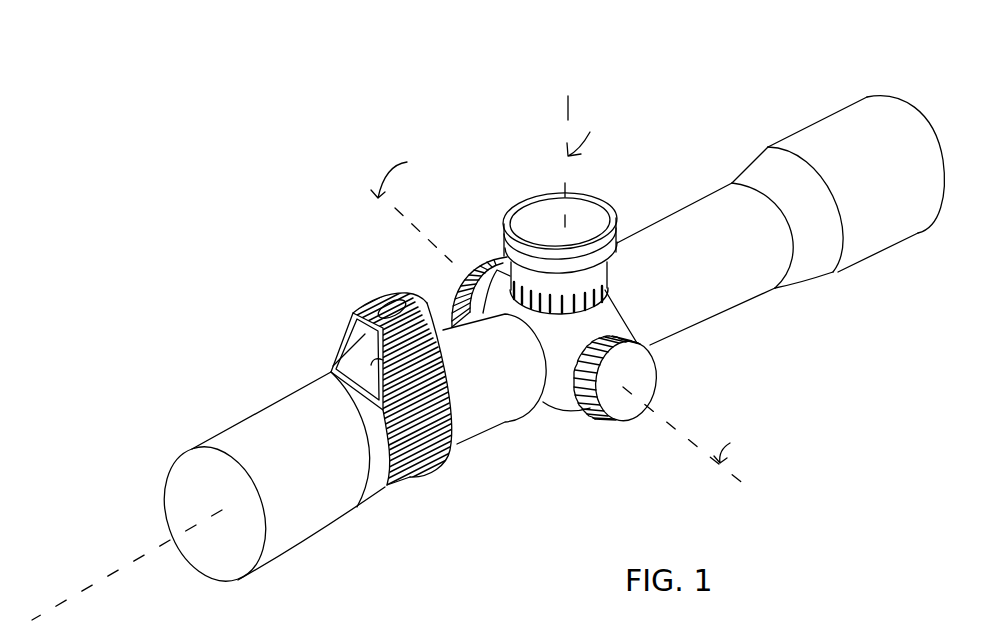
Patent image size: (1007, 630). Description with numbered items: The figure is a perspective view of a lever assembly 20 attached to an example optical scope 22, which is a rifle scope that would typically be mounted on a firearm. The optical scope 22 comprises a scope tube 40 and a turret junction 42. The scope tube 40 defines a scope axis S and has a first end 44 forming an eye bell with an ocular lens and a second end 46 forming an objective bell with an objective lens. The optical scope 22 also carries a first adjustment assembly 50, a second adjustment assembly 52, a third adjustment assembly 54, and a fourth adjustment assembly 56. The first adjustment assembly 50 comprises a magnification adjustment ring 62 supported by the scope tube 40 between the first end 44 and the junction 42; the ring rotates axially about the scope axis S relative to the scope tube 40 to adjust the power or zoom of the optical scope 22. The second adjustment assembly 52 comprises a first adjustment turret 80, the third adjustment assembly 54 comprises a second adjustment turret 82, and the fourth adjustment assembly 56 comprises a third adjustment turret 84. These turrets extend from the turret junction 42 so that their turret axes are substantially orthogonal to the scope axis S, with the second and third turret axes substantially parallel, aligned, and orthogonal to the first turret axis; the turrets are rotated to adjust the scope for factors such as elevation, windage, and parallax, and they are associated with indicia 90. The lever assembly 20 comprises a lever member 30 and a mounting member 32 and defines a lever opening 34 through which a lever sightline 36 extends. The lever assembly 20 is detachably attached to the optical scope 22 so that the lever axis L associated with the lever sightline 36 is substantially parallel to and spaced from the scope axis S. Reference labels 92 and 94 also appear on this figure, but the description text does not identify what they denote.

The lever assembly 20 is at (285, 348).
The optical scope 22 is at (856, 78).
The lever member 30 is at (352, 321).
The mounting member 32 is at (384, 370).
The lever opening 34 is at (326, 363).
The lever sightline 36 is at (253, 410).
The scope tube 40 is at (508, 413).
The turret junction 42 is at (568, 412).
The first end 44 is at (153, 478).
The second end 46 is at (925, 115).
The first adjustment assembly 50 is at (477, 463).
The second adjustment assembly 52 is at (628, 220).
The third adjustment assembly 54 is at (447, 296).
The fourth adjustment assembly 56 is at (667, 382).
The magnification adjustment ring 62 is at (500, 493).
The first adjustment turret 80 is at (588, 210).
The second adjustment turret 82 is at (473, 257).
The third adjustment turret 84 is at (612, 418).
The indicia 90 is at (616, 281).
The ring lower edge 92 is at (417, 473).
The magnification ring M 94 is at (383, 621).